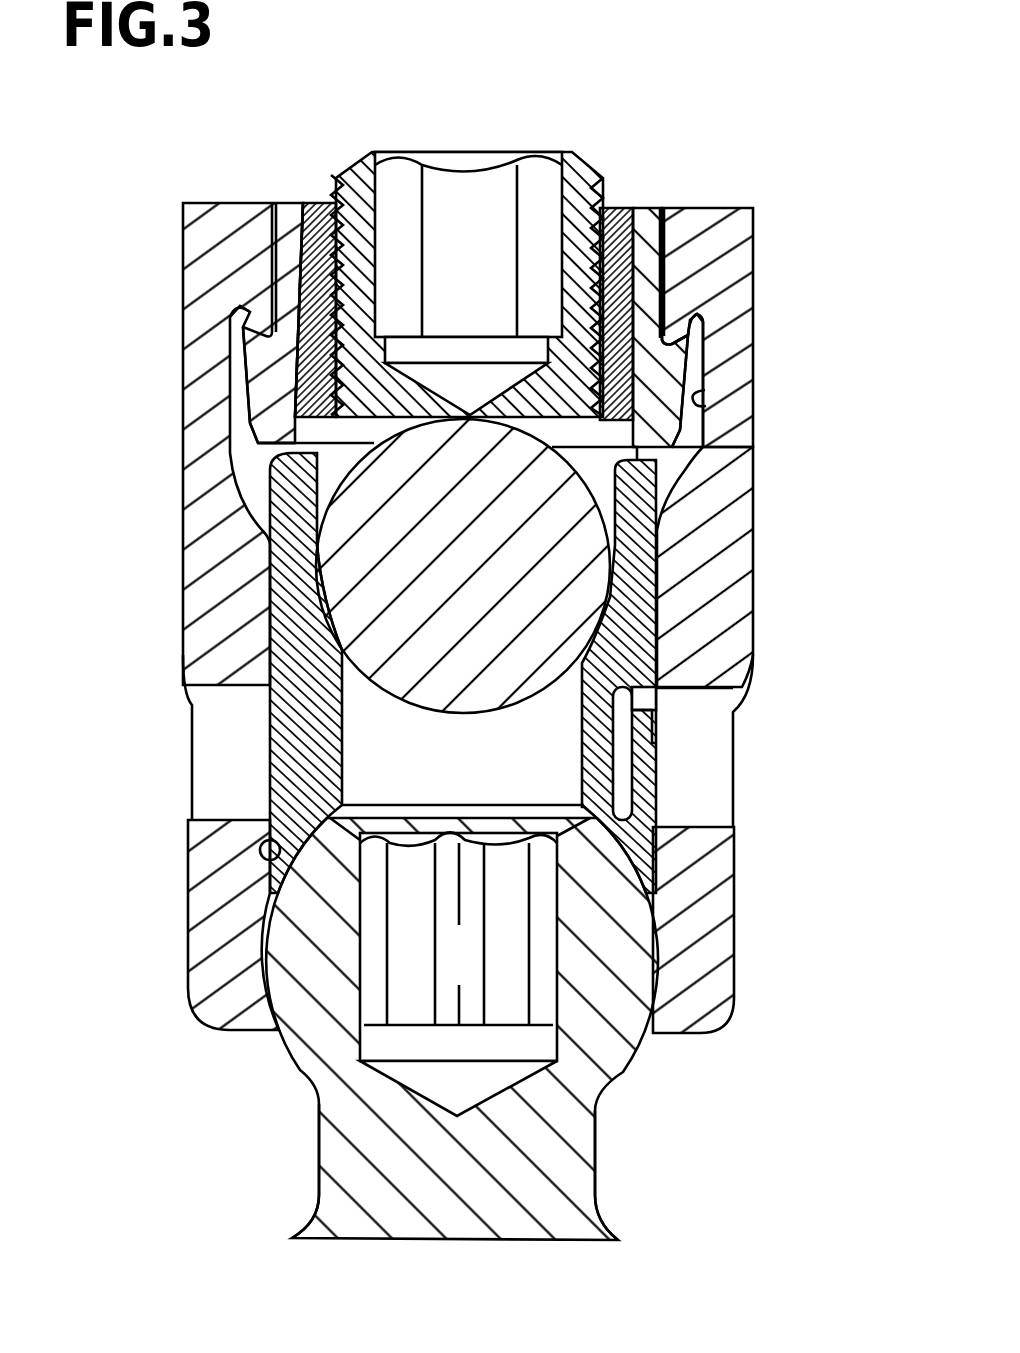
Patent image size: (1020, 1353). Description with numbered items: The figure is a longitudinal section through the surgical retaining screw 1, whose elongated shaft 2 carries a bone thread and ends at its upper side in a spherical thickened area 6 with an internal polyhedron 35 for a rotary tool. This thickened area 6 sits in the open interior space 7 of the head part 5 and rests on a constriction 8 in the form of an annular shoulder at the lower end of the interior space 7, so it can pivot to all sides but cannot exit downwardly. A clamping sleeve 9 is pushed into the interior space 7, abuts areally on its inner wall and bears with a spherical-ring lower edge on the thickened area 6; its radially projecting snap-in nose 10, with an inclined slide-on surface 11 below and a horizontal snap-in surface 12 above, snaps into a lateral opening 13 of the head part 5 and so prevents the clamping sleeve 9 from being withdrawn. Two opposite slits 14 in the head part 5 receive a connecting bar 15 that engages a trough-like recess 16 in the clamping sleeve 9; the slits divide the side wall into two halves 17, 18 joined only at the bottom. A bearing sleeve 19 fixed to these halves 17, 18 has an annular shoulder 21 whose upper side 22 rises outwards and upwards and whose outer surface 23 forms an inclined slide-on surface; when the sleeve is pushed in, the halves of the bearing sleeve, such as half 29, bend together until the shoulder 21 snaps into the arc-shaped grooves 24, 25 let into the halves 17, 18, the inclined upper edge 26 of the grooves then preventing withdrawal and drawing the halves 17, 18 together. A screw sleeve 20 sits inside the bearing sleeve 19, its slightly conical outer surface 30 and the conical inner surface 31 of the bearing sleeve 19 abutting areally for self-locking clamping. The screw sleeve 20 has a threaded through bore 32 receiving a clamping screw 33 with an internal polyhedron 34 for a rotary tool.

The surgical retaining screw 1 is at (148, 466).
The shaft 2 is at (622, 1237).
The head part 5 is at (754, 545).
The spherical thickened area 6 is at (613, 937).
The interior space 7 is at (268, 855).
The constriction 8 is at (268, 965).
The clamping sleeve 9 is at (268, 548).
The snap-in nose 10 is at (668, 742).
The slide-on surface 11 is at (683, 768).
The snap-in surface 12 is at (683, 712).
The opening 13 is at (700, 830).
The slits 14 is at (272, 200).
The connecting bar 15 is at (448, 577).
The trough-like recess 16 is at (330, 613).
The half of the head part 17 is at (213, 203).
The half of the head part 18 is at (725, 215).
The bearing sleeve 19 is at (669, 258).
The screw sleeve 20 is at (298, 257).
The annular shoulder 21 is at (687, 337).
The upper side 22 is at (690, 318).
The outer surface 23 is at (701, 340).
The arc-shaped groove 24 is at (247, 390).
The arc-shaped groove 25 is at (707, 400).
The upper edge 26 is at (237, 330).
The half of the bearing sleeve 29 is at (690, 444).
The outer surface 30 is at (656, 260).
The inner surface 31 is at (630, 235).
The bore 32 is at (580, 290).
The clamping screw 33 is at (350, 150).
The internal polyhedron 34 is at (453, 280).
The internal polyhedron 35 is at (445, 969).